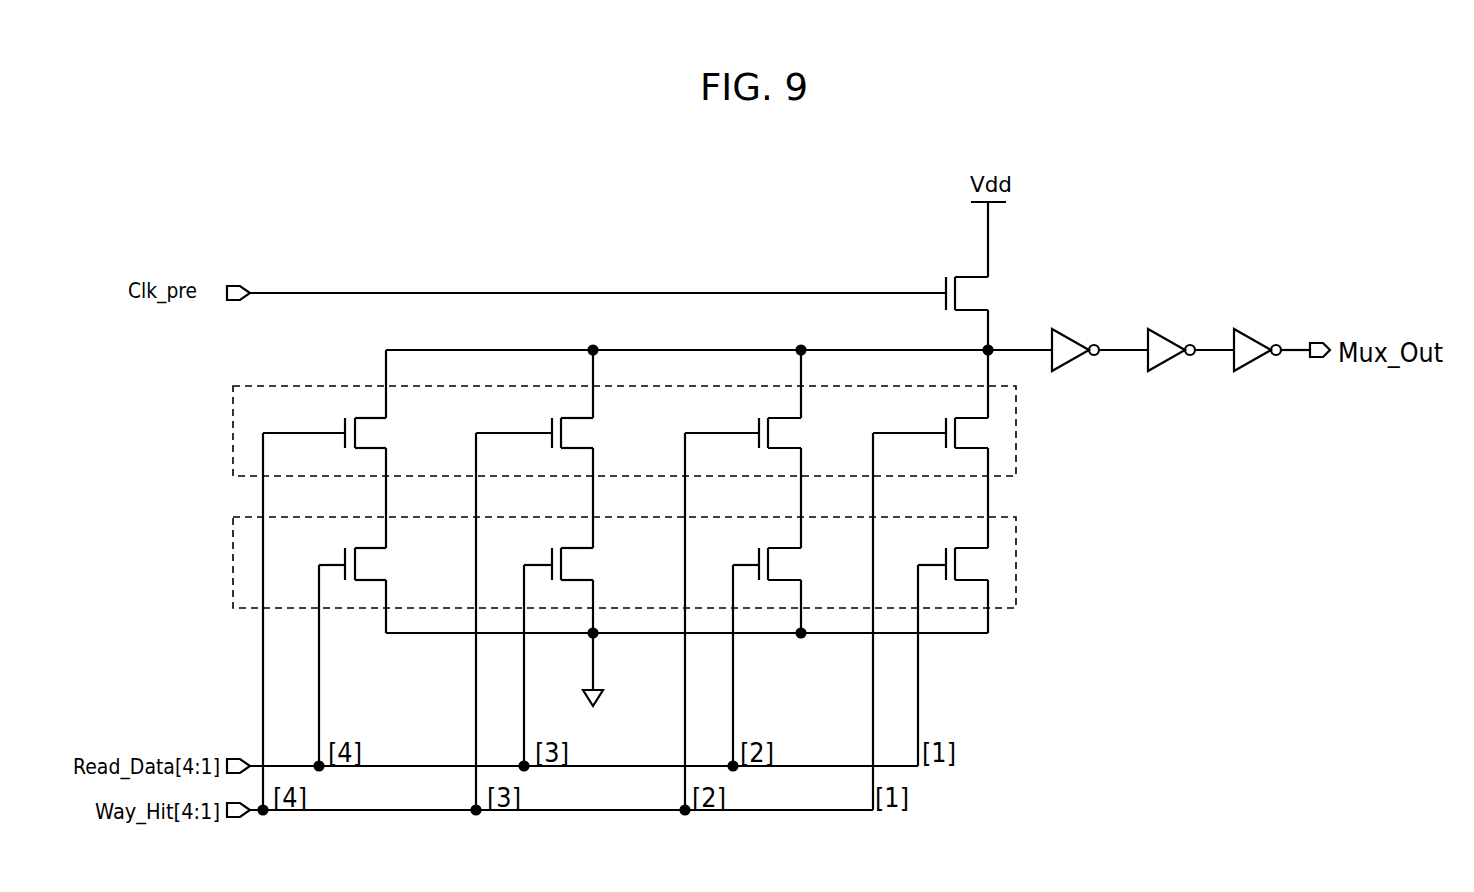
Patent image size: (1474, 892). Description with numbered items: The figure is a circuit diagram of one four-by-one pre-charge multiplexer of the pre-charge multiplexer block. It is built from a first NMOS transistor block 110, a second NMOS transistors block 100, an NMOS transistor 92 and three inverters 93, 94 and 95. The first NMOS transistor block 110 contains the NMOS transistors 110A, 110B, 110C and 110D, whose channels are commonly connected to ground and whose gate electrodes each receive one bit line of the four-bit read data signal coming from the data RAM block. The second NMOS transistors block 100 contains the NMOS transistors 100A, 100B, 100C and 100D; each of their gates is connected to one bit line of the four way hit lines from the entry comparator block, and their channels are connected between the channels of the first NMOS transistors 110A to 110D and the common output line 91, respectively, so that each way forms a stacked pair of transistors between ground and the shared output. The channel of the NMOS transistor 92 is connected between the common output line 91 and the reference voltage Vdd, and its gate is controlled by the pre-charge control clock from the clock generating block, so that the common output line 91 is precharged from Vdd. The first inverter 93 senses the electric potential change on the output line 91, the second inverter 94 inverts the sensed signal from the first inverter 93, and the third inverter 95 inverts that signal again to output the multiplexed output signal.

The common output line 91 is at (940, 348).
The NMOS transistor 92 is at (978, 276).
The first inverter 93 is at (1068, 371).
The second inverter 94 is at (1164, 371).
The third inverter 95 is at (1250, 371).
The second NMOS transistors block 100 is at (233, 432).
The NMOS transistor 100A is at (368, 416).
The NMOS transistor 100B is at (575, 416).
The NMOS transistor 100C is at (782, 416).
The NMOS transistor 100D is at (970, 416).
The first NMOS transistor block 110 is at (233, 564).
The NMOS transistor 110A is at (368, 548).
The NMOS transistor 110B is at (575, 548).
The NMOS transistor 110C is at (782, 548).
The NMOS transistor 110D is at (970, 548).